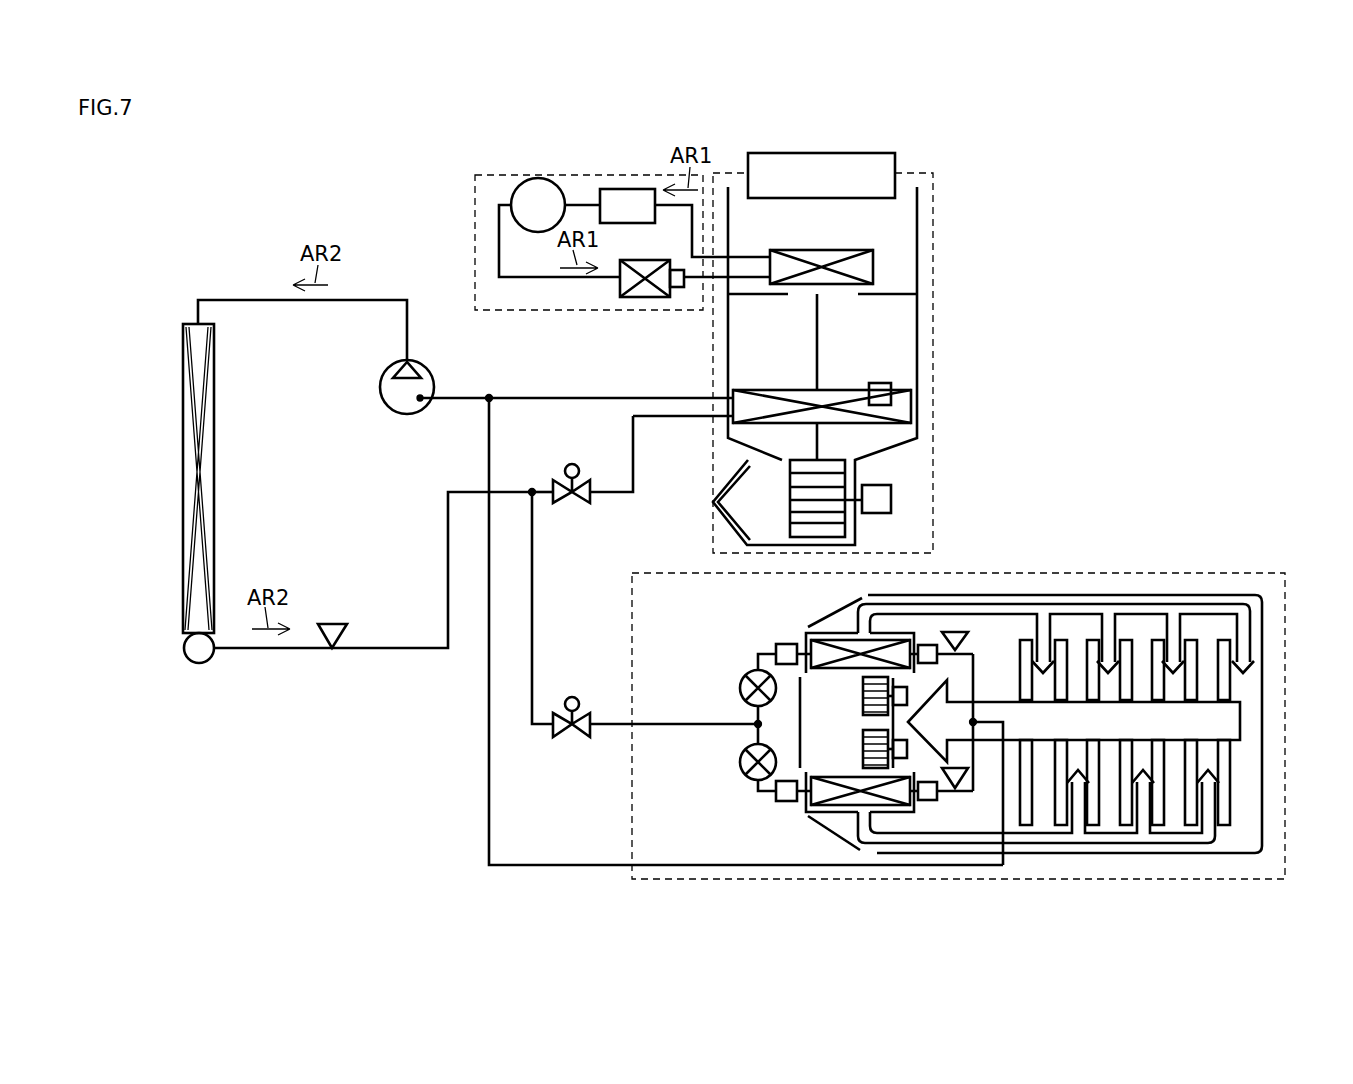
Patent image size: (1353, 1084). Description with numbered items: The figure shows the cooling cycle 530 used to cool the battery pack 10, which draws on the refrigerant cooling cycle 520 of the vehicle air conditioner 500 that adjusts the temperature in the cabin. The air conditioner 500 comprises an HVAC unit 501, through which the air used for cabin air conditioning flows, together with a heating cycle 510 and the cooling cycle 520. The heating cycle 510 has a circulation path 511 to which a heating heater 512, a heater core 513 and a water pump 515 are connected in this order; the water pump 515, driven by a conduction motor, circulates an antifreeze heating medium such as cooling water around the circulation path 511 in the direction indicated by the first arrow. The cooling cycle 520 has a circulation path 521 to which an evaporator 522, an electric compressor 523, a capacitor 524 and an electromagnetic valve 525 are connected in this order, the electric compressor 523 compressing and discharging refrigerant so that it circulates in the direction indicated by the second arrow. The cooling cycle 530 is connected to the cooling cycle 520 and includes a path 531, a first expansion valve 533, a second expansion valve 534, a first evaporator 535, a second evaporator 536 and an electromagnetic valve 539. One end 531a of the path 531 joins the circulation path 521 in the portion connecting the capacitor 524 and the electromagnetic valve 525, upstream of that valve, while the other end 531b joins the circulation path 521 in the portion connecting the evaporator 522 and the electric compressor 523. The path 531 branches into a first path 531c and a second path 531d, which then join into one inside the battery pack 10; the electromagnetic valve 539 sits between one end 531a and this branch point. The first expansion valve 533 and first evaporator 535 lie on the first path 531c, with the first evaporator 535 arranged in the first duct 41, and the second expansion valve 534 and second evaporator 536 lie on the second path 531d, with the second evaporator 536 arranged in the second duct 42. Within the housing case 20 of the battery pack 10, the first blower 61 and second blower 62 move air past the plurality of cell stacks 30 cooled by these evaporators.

The air conditioner 500 is at (1143, 137).
The HVAC unit 501 is at (921, 172).
The heating cycle 510 is at (495, 180).
The circulation path 511 is at (575, 284).
The heating heater 512 is at (648, 298).
The heater core 513 is at (873, 267).
The water pump 515 is at (536, 178).
The cooling cycle 520 is at (207, 271).
The circulation path 521 is at (383, 650).
The evaporator 522 is at (911, 405).
The electric compressor 523 is at (433, 373).
The capacitor 524 is at (155, 491).
The electromagnetic valve 525 is at (572, 463).
The cooling cycle 530 is at (447, 820).
The path 531 is at (534, 605).
The one end of path 531a is at (535, 495).
The other end of path 531b is at (495, 400).
The first path 531c is at (945, 795).
The second path 531d is at (942, 630).
The first expansion valve 533 is at (740, 766).
The second expansion valve 534 is at (738, 692).
The first evaporator 535 is at (826, 812).
The second evaporator 536 is at (830, 638).
The electromagnetic valve 539 is at (572, 696).
The battery pack 10 is at (1290, 568).
The housing case 20 is at (1262, 735).
The cell stacks 30 is at (1025, 826).
The first duct 41 is at (990, 846).
The second duct 42 is at (1002, 603).
The first blower 61 is at (862, 749).
The second blower 62 is at (862, 696).